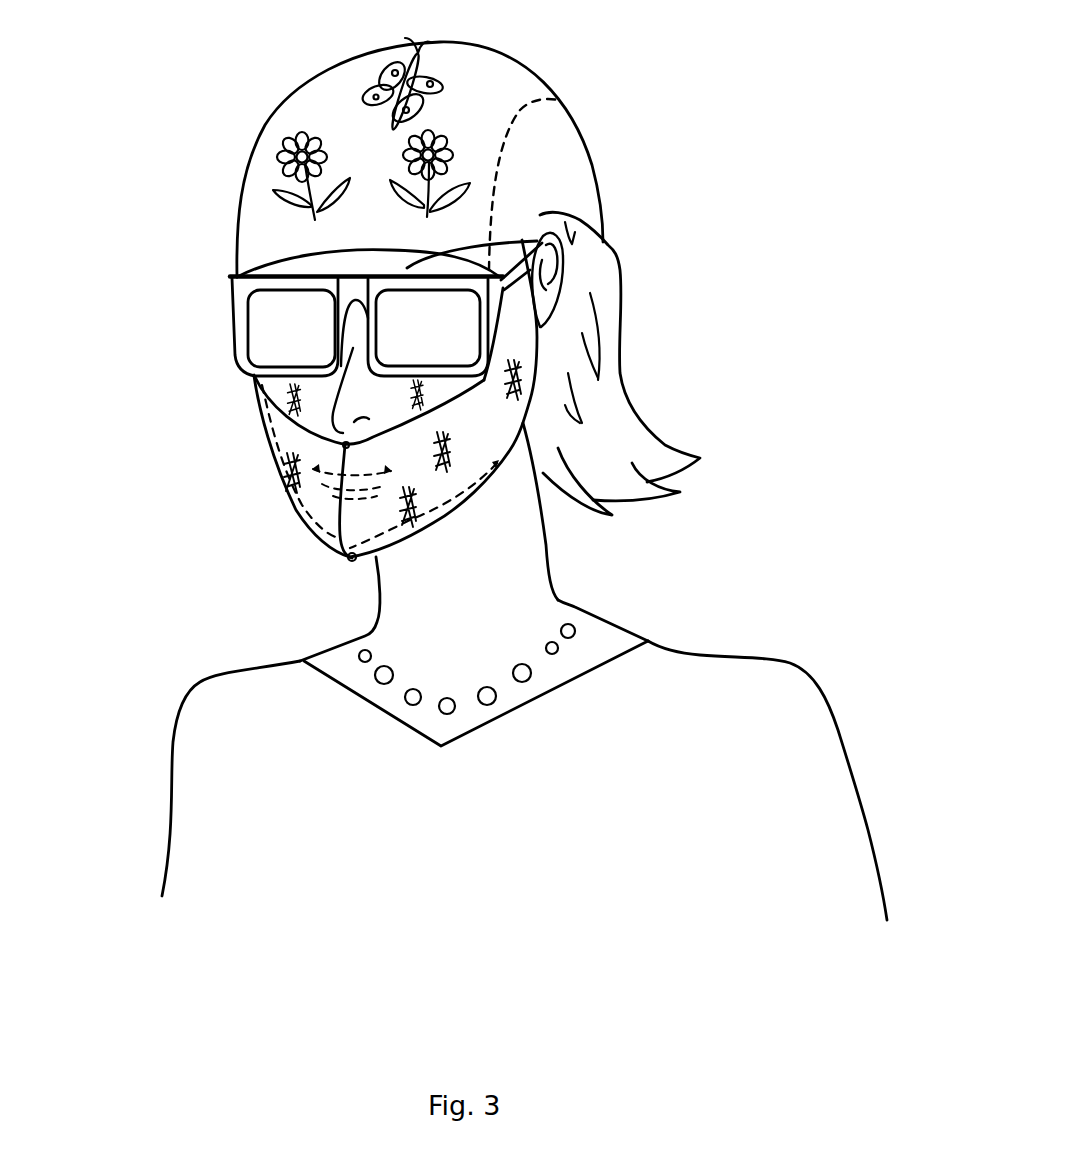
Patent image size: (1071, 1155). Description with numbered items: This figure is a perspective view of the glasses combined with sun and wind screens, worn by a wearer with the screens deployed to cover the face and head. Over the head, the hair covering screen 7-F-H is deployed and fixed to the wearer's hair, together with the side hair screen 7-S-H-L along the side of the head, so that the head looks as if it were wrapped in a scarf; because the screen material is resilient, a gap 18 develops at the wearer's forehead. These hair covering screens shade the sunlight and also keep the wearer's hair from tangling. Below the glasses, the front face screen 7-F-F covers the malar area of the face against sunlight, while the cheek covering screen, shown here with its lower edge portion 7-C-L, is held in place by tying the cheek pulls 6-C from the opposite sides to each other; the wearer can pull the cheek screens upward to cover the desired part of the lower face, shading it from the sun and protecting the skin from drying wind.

The hair covering screen 7-F-H is at (490, 82).
The side head seam line 7-S-H-L is at (547, 177).
The gap 18 is at (472, 252).
The front face screen 7-F-F is at (303, 393).
The cheek pull 6-C is at (352, 558).
The chin line 7-C-L is at (462, 480).